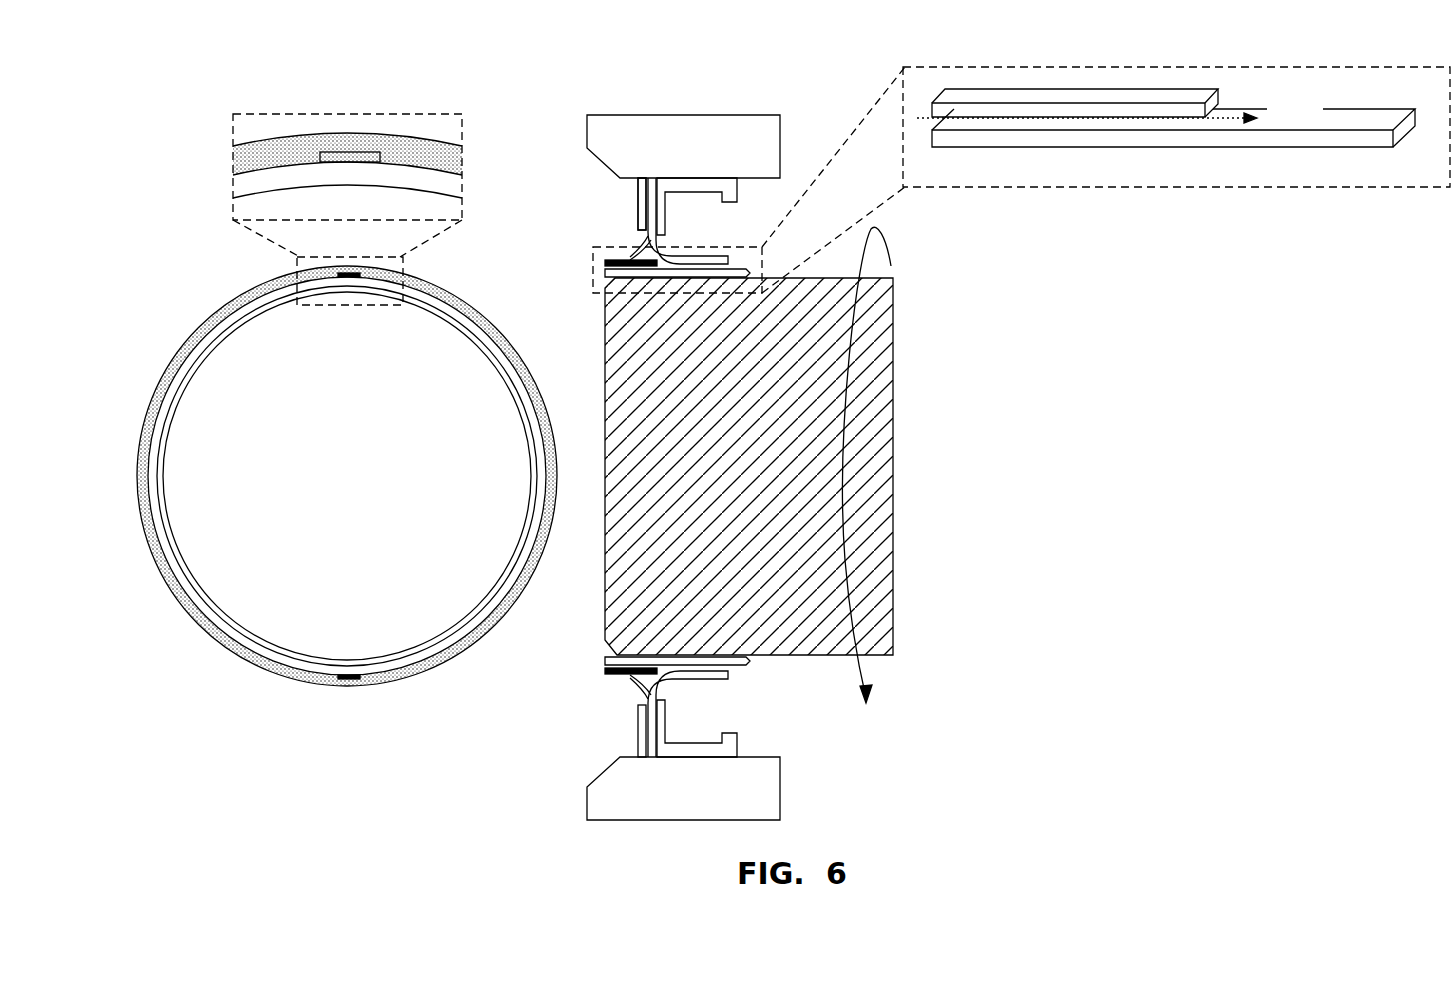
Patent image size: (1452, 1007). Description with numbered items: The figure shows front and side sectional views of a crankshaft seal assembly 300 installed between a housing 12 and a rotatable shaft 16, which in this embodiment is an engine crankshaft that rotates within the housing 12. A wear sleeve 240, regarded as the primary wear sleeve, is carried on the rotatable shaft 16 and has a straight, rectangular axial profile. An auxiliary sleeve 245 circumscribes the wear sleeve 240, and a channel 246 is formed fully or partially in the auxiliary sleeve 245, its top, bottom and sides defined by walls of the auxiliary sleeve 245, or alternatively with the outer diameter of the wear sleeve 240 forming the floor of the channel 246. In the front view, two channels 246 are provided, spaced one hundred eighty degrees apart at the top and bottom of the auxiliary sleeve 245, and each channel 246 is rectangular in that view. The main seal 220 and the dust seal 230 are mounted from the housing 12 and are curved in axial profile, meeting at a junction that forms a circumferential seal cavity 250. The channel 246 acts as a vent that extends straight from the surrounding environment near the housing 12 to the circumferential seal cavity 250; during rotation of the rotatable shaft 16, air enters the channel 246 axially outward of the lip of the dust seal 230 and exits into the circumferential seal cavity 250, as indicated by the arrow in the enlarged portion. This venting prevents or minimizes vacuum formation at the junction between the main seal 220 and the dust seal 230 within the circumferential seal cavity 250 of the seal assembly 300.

The housing 12 is at (698, 154).
The rotatable shaft 16 is at (356, 467).
The main seal 220 is at (677, 253).
The dust seal 230 is at (623, 231).
The wear sleeve 240 is at (235, 186).
The auxiliary sleeve 245 is at (235, 150).
The channel 246 is at (347, 152).
The circumferential seal cavity 250 is at (1311, 121).
The seal assembly 300 is at (697, 230).